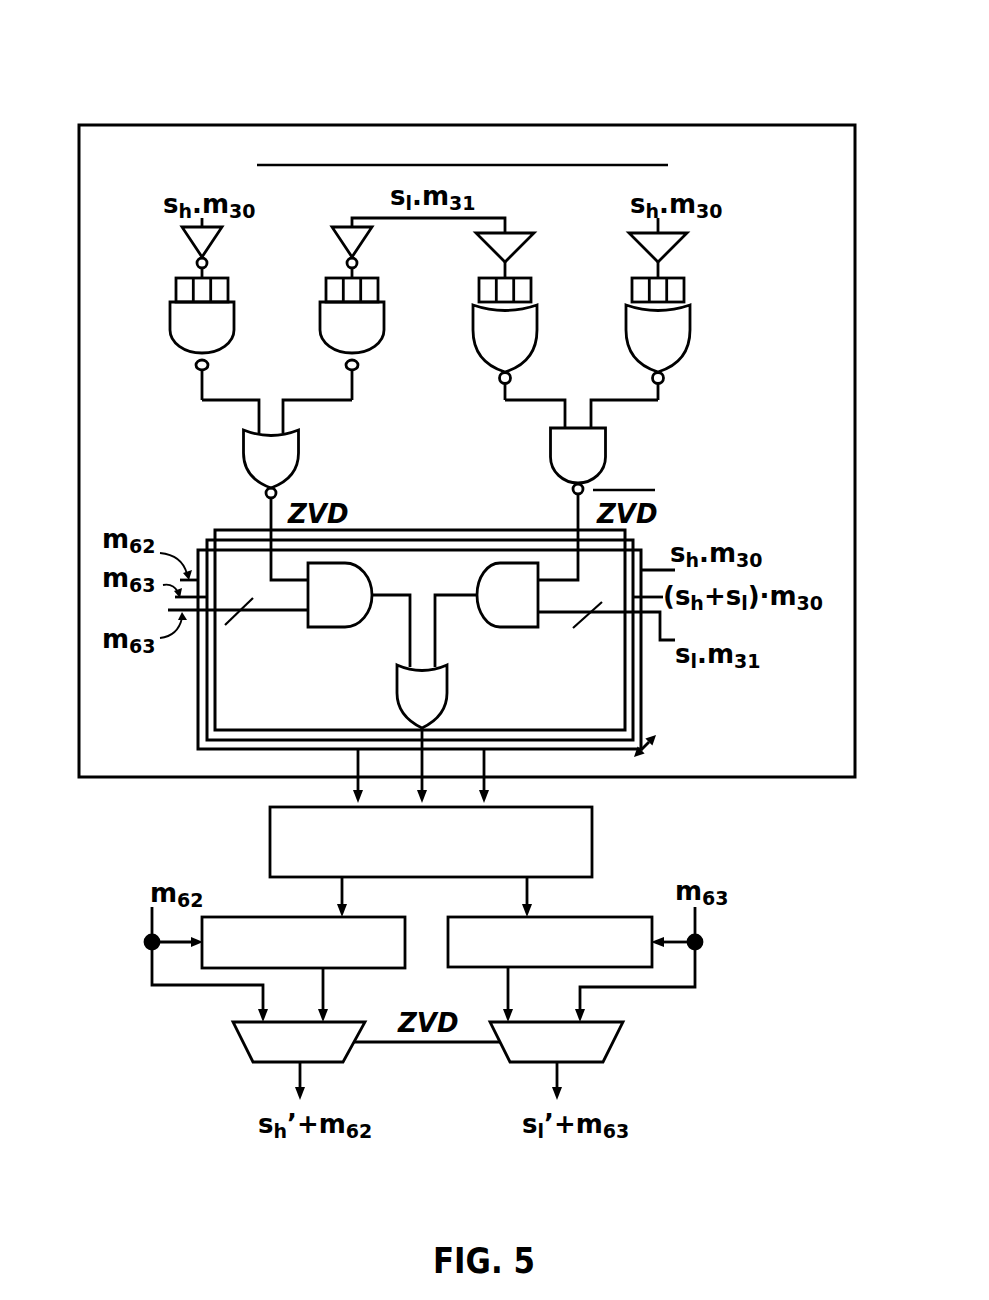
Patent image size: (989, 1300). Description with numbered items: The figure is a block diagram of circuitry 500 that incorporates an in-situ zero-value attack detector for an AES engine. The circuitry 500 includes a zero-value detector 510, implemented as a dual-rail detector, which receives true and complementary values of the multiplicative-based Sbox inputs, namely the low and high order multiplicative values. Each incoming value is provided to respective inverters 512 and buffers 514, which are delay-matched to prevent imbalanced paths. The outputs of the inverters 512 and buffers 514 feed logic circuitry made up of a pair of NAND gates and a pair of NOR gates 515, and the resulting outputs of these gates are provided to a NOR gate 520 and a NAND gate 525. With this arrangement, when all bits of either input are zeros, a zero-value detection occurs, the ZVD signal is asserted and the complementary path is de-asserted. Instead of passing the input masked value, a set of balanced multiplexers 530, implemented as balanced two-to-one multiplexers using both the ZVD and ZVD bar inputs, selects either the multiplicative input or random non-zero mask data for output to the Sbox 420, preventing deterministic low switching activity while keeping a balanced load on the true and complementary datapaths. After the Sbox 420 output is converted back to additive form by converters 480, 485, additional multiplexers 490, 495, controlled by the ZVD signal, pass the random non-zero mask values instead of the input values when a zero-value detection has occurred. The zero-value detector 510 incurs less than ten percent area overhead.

The circuitry 500 is at (116, 22).
The zero-value detector 510 is at (672, 125).
The inverters 512 is at (213, 240).
The buffers 514 is at (520, 245).
The NAND gates and NOR gates 515 is at (234, 320).
The NOR gate 520 is at (298, 432).
The NAND gate 525 is at (606, 432).
The balanced multiplexers 530 is at (642, 680).
The Sbox 420 is at (594, 818).
The converter 480 is at (213, 968).
The converter 485 is at (652, 958).
The multiplexer 490 is at (253, 1057).
The multiplexer 495 is at (615, 1040).